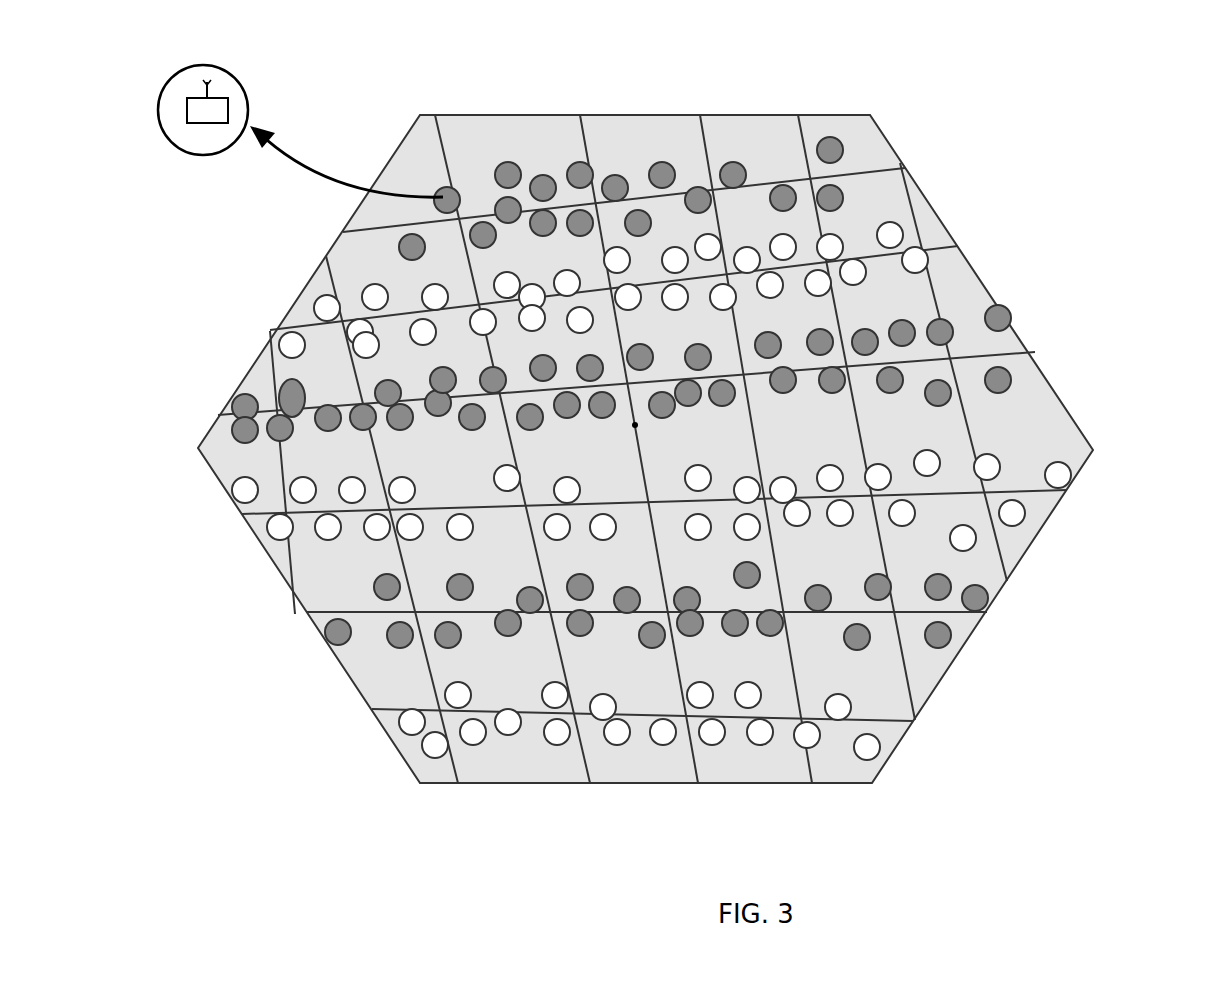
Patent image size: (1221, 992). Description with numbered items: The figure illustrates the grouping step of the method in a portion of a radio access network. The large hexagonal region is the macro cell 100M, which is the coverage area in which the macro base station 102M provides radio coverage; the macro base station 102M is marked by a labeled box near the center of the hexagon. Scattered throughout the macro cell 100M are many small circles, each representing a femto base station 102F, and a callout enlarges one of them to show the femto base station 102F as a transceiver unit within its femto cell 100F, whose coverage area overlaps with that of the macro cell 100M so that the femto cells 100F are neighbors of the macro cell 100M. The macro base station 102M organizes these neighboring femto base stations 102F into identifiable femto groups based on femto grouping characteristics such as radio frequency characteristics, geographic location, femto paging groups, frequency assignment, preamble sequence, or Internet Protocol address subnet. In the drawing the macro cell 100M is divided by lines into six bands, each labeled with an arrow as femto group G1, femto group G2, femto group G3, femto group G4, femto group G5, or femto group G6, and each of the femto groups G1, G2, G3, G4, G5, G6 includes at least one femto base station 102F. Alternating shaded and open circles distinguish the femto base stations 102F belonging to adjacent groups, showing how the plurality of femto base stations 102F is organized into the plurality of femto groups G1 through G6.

The macro cell 100M is at (885, 132).
The macro base station 102M is at (635, 430).
The femto cell 100F is at (248, 107).
The femto base station 102F is at (228, 110).
The femto group G1 is at (905, 177).
The femto group G2 is at (1190, 255).
The femto group G3 is at (1055, 352).
The femto group G4 is at (1098, 497).
The femto group G5 is at (1026, 638).
The femto group G6 is at (928, 738).